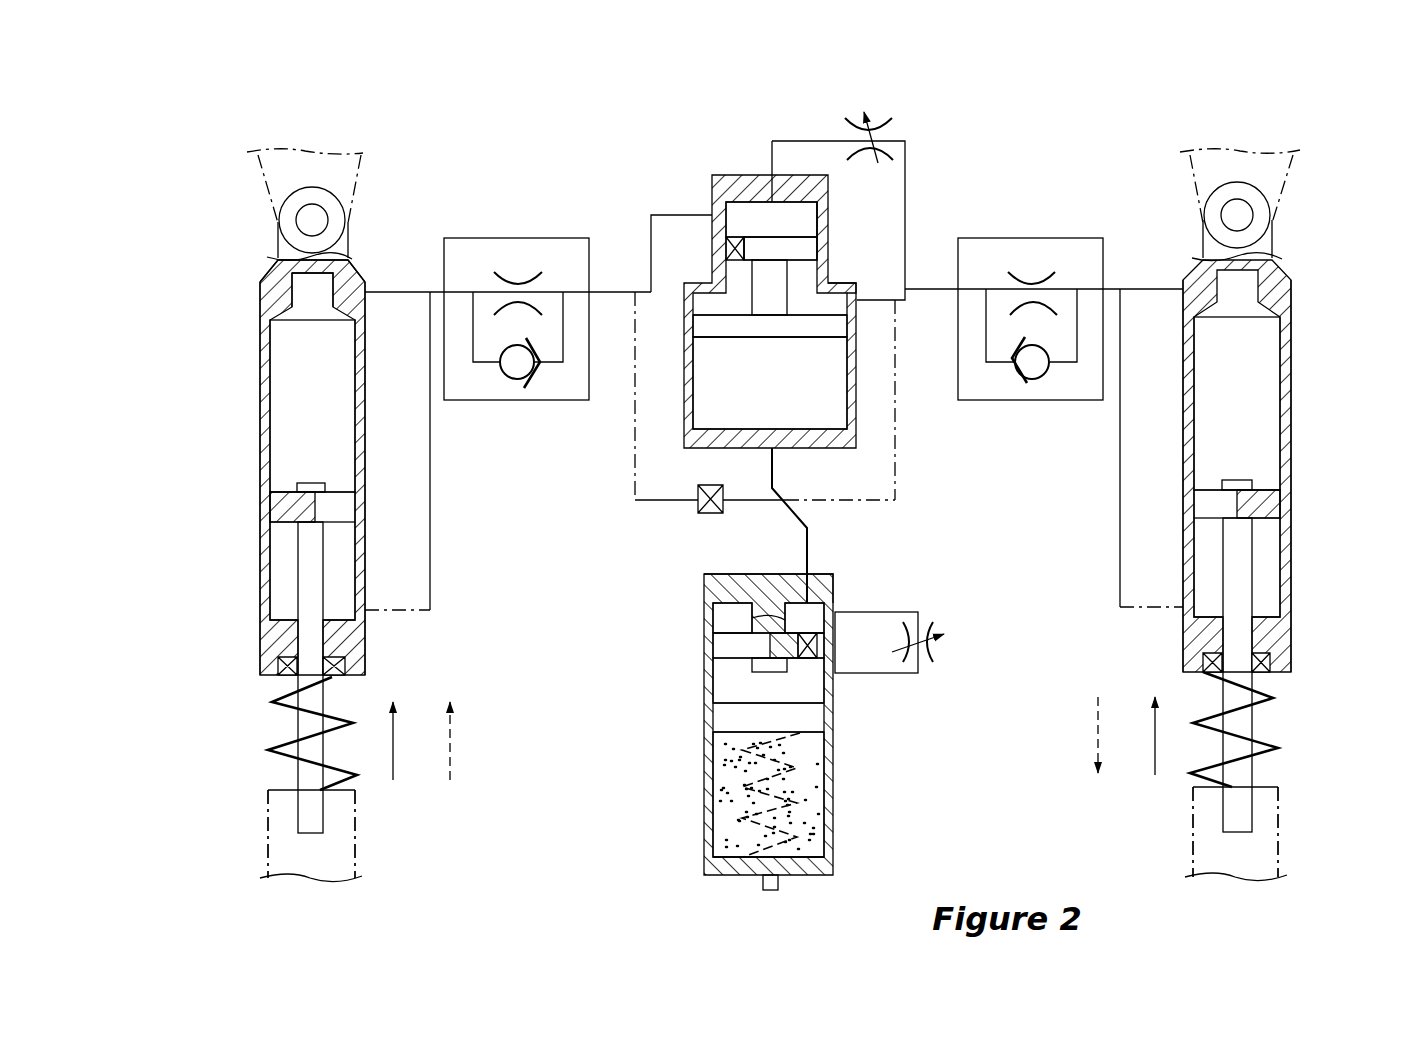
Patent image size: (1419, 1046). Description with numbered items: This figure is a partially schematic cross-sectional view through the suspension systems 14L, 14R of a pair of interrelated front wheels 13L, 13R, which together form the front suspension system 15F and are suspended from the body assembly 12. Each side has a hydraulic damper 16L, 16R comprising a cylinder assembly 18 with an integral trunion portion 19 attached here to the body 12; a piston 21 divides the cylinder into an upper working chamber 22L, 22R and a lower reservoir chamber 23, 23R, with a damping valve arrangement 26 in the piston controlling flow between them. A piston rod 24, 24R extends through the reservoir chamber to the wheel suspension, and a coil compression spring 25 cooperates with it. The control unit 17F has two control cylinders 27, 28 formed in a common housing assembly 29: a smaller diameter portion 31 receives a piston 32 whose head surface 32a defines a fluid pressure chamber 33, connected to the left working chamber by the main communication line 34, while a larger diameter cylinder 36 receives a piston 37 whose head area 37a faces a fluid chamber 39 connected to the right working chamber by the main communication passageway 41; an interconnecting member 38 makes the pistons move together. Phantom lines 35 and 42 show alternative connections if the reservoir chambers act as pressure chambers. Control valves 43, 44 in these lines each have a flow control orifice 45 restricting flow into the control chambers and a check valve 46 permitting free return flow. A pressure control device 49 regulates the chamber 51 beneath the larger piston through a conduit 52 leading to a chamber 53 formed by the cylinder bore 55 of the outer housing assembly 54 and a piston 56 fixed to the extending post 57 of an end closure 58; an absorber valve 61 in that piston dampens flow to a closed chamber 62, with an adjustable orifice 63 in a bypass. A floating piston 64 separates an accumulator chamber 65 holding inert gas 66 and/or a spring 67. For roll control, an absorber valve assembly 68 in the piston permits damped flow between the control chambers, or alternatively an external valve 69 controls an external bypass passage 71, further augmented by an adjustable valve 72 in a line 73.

The body assembly 12 is at (368, 172).
The left front wheel 13L is at (355, 852).
The right front wheel 13R is at (1193, 850).
The left suspension system 14L is at (777, 490).
The right suspension system 14R is at (1244, 570).
The front suspension system 15F is at (1244, 515).
The left hydraulic damper 16L is at (257, 405).
The right hydraulic damper 16R is at (1293, 418).
The control unit 17F is at (791, 315).
The cylinder assembly 18 is at (258, 450).
The trunion portion 19 is at (266, 272).
The piston 21 is at (350, 508).
The left working chamber 22L is at (340, 434).
The right working chamber 22R is at (1265, 402).
The reservoir chamber 23 is at (285, 585).
The right reservoir chamber 23R is at (1265, 574).
The piston rod 24 is at (305, 811).
The right piston rod 24R is at (1243, 810).
The coil compression spring 25 is at (300, 740).
The damping valve arrangement 26 is at (268, 527).
The first control cylinder 27 is at (777, 282).
The second control cylinder 28 is at (682, 423).
The housing assembly 29 is at (708, 189).
The smaller diameter portion 31 is at (800, 207).
The piston 32 is at (805, 250).
The head surface 32a is at (808, 218).
The fluid pressure chamber 33 is at (790, 232).
The main communication line 34 is at (398, 290).
The pressure line 35 is at (430, 560).
The larger diameter cylinder 36 is at (688, 300).
The piston 37 is at (813, 328).
The head area 37a is at (738, 308).
The interconnecting member 38 is at (777, 282).
The fluid chamber 39 is at (813, 303).
The main communication passageway 41 is at (1158, 288).
The passage 42 is at (1118, 493).
The control valve 43 is at (483, 236).
The control valve 44 is at (1064, 236).
The flow control orifice 45 is at (525, 282).
The check valve 46 is at (515, 380).
The pressure control device 49 is at (807, 703).
The chamber 51 is at (743, 400).
The conduit 52 is at (810, 547).
The chamber 53 is at (807, 622).
The outer housing assembly 54 is at (700, 760).
The cylinder bore 55 is at (716, 617).
The piston 56 is at (722, 643).
The extending post 57 is at (748, 662).
The end closure 58 is at (742, 575).
The absorber valve 61 is at (807, 660).
The closed chamber 62 is at (805, 690).
The adjustable orifice 63 is at (935, 650).
The floating piston 64 is at (718, 716).
The accumulator chamber 65 is at (805, 782).
The inert gas 66 is at (818, 827).
The spring 67 is at (745, 812).
The absorber valve assembly 68 is at (730, 228).
The external absorber valve 69 is at (697, 503).
The external bypass passage 71 is at (897, 467).
The adjustable valve 72 is at (880, 122).
The line 73 is at (808, 140).